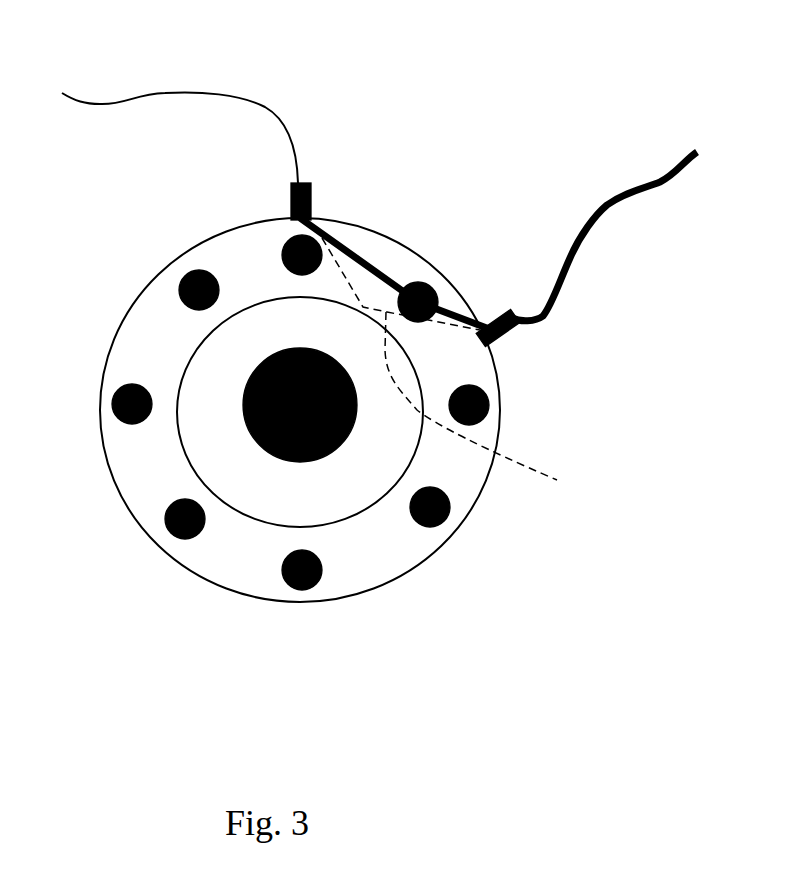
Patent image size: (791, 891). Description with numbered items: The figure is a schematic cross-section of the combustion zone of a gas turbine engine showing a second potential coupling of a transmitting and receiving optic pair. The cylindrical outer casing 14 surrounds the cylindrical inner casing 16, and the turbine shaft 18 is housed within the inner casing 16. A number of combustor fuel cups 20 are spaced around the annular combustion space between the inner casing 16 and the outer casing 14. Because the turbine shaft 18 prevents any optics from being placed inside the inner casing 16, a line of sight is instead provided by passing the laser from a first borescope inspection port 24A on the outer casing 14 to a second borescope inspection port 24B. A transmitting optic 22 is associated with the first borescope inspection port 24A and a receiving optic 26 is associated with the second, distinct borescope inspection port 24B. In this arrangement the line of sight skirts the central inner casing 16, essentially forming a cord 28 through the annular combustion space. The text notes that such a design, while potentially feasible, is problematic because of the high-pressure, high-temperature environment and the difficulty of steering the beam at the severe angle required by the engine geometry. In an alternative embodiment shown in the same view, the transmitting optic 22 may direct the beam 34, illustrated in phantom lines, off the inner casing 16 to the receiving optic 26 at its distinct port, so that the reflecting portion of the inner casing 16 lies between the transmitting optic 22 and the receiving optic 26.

The cylindrical outer casing 14 is at (443, 547).
The cylindrical inner casing 16 is at (392, 488).
The turbine shaft 18 is at (262, 452).
The combustor fuel cups 20 is at (170, 537).
The transmitting optic 22 is at (311, 200).
The first borescope inspection port 24A is at (292, 217).
The second borescope inspection port 24B is at (478, 338).
The receiving optic 26 is at (507, 338).
The cord 28 is at (363, 262).
The beam 34 is at (457, 365).